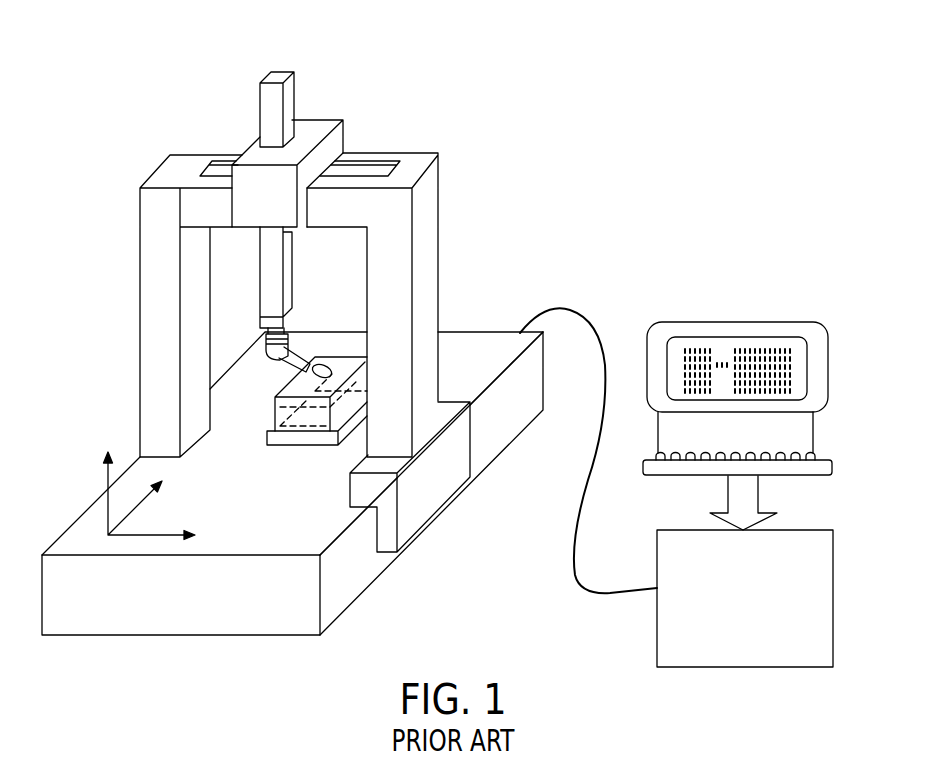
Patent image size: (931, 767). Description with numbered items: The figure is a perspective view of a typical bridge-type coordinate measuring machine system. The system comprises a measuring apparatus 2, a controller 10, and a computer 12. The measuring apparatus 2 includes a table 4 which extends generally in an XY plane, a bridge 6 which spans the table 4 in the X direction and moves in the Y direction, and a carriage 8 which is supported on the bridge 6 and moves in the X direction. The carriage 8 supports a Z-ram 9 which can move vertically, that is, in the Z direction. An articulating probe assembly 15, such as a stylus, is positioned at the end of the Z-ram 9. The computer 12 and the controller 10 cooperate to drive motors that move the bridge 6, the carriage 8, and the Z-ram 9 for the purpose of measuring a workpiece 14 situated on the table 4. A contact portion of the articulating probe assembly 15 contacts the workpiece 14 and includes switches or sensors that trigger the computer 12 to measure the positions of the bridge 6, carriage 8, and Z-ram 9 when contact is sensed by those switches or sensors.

The measuring apparatus 2 is at (186, 66).
The table 4 is at (240, 506).
The bridge 6 is at (409, 166).
The carriage 8 is at (314, 122).
The Z-ram 9 is at (252, 285).
The controller 10 is at (733, 612).
The computer 12 is at (823, 402).
The workpiece 14 is at (353, 363).
The articulating probe assembly 15 is at (260, 361).